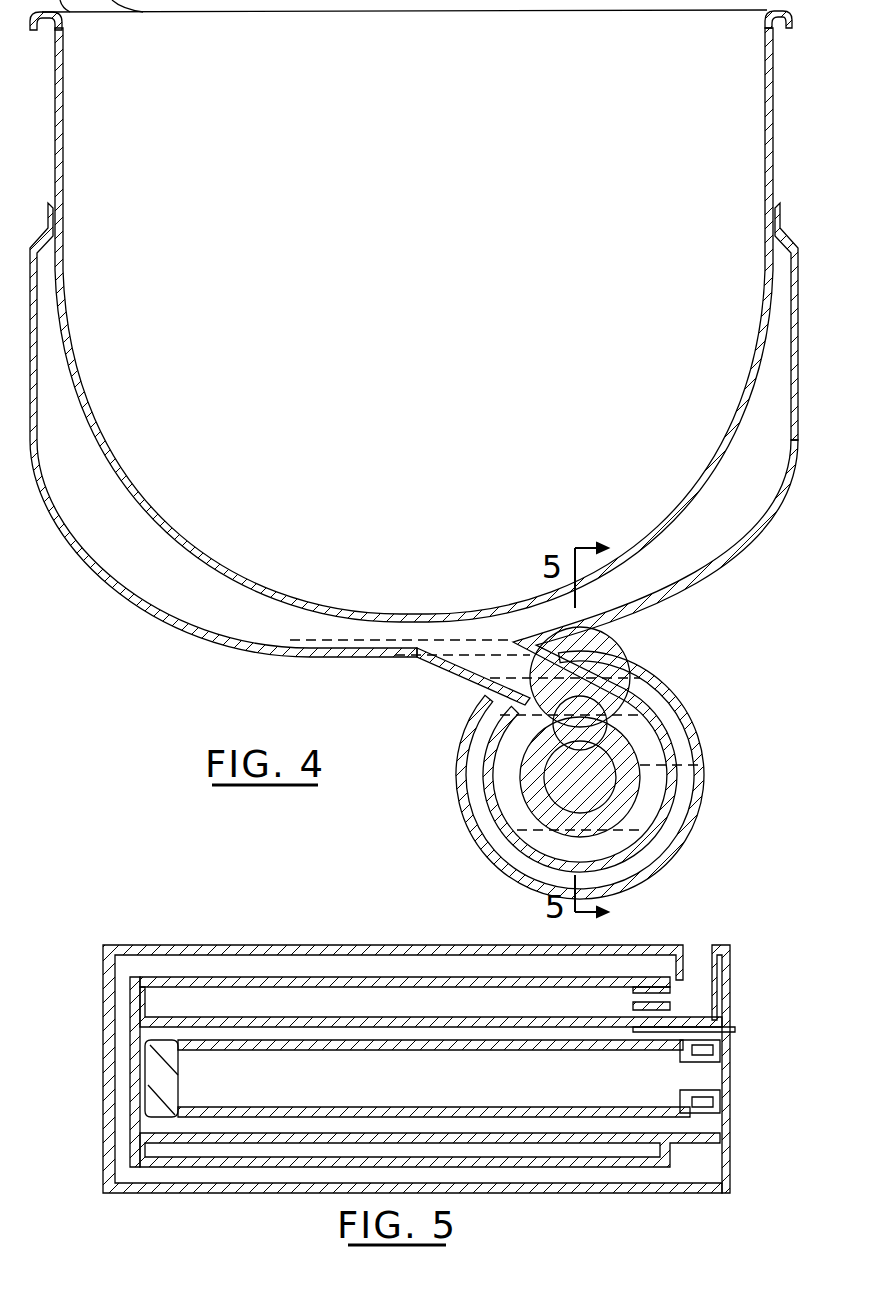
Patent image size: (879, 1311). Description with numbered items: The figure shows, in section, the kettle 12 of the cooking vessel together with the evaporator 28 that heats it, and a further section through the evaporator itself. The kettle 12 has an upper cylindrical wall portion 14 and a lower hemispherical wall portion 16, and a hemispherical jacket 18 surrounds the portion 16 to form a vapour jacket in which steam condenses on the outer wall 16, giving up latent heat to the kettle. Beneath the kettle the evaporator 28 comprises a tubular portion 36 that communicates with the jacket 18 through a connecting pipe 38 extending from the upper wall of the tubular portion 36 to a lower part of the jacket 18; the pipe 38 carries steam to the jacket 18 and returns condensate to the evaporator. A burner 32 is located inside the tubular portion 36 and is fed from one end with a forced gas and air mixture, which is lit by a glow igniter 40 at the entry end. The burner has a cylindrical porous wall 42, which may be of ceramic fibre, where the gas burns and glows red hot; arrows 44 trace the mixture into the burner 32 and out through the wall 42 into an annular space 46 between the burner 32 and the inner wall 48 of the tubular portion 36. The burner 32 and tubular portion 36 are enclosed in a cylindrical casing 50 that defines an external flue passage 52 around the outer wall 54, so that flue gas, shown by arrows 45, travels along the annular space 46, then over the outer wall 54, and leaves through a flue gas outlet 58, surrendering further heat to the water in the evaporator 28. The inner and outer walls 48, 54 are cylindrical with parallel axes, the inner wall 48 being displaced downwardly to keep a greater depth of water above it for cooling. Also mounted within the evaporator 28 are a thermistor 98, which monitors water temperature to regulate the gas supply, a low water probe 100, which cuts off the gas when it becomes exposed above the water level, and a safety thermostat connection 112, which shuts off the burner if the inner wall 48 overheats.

In FIG. 4, the kettle 12 is at (773, 96).
In FIG. 4, the cylindrical wall portion 14 is at (773, 160).
In FIG. 4, the hemispherical wall portion 16 is at (792, 340).
In FIG. 4, the hemispherical jacket 18 is at (798, 262).
In FIG. 4, the evaporator 28 is at (684, 698).
In FIG. 5, the evaporator 28 is at (143, 926).
In FIG. 4, the burner 32 is at (545, 770).
In FIG. 5, the burner 32 is at (157, 1075).
In FIG. 4, the tubular portion 36 is at (674, 755).
In FIG. 5, the tubular portion 36 is at (130, 1000).
In FIG. 4, the connecting pipe 38 is at (450, 668).
In FIG. 5, the glow igniter 40 is at (734, 1031).
In FIG. 5, the porous wall 42 is at (227, 1117).
In FIG. 5, the arrows 44 is at (446, 1093).
In FIG. 5, the arrows 45 is at (123, 1033).
In FIG. 5, the annular space 46 is at (447, 1028).
In FIG. 5, the inner wall 48 is at (337, 1017).
In FIG. 4, the cylindrical casing 50 is at (690, 810).
In FIG. 5, the cylindrical casing 50 is at (103, 957).
In FIG. 4, the external flue passage 52 is at (679, 782).
In FIG. 5, the external flue passage 52 is at (259, 974).
In FIG. 4, the outer wall 54 is at (647, 841).
In FIG. 5, the outer wall 54 is at (594, 1158).
In FIG. 5, the flue gas outlet 58 is at (700, 952).
In FIG. 5, the thermistor 98 is at (665, 986).
In FIG. 5, the low water probe 100 is at (673, 998).
In FIG. 5, the safety thermostat connection 112 is at (670, 1012).